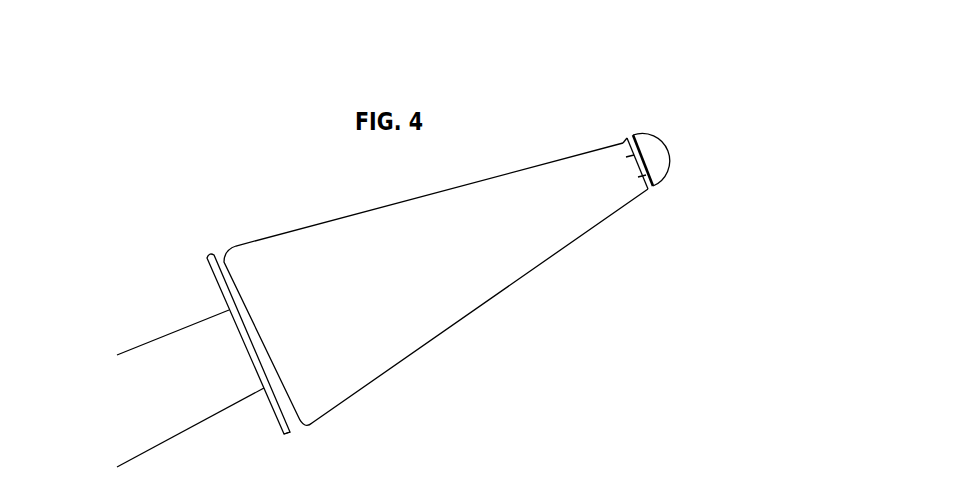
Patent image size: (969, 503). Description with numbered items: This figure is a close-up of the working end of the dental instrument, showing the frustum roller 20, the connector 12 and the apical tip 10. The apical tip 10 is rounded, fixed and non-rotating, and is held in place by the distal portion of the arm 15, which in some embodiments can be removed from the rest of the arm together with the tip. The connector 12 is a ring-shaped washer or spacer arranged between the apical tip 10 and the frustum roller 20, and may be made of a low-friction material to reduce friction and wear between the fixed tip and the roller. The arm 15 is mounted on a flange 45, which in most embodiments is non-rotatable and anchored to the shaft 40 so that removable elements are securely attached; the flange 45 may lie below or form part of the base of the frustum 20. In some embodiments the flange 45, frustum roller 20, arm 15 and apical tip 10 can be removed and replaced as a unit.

The apical tip 10 is at (667, 157).
The connector 12 is at (661, 177).
The frustum roller 20 is at (450, 253).
The distal portion of the arm 15 is at (262, 345).
The shaft 40 is at (132, 440).
The flange 45 is at (292, 433).